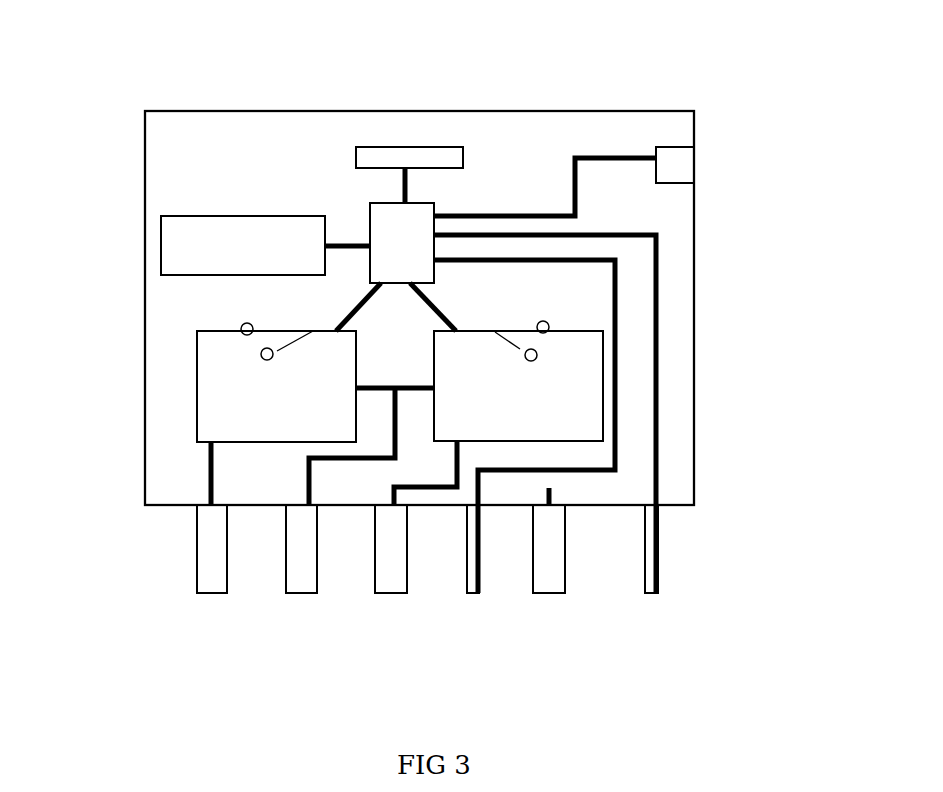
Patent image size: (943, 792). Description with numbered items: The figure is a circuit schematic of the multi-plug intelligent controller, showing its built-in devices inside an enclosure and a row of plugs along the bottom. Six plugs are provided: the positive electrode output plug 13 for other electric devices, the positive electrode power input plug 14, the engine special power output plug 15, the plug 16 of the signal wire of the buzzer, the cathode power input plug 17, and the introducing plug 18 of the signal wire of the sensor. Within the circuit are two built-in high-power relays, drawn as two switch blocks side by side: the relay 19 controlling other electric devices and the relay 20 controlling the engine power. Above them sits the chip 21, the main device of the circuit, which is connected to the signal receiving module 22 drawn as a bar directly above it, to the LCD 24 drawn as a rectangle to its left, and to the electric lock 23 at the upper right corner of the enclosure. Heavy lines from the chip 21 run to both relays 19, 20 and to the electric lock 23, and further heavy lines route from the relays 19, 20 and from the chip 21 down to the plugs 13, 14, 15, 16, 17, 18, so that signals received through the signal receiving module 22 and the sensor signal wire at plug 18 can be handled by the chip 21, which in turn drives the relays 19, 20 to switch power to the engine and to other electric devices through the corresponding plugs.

The positive electrode output plug 13 is at (205, 602).
The positive electrode power input plug 14 is at (302, 602).
The engine special power output plug 15 is at (390, 600).
The plug of the signal wire of the buzzer 16 is at (463, 600).
The cathode power input plug 17 is at (540, 600).
The introducing plug of the signal wire of the sensor 18 is at (640, 600).
The relay controlling other electric devices 19 is at (213, 393).
The relay controlling the engine power 20 is at (583, 388).
The chip 21 is at (388, 237).
The signal receiving module 22 is at (447, 146).
The electric lock 23 is at (682, 167).
The LCD 24 is at (170, 248).